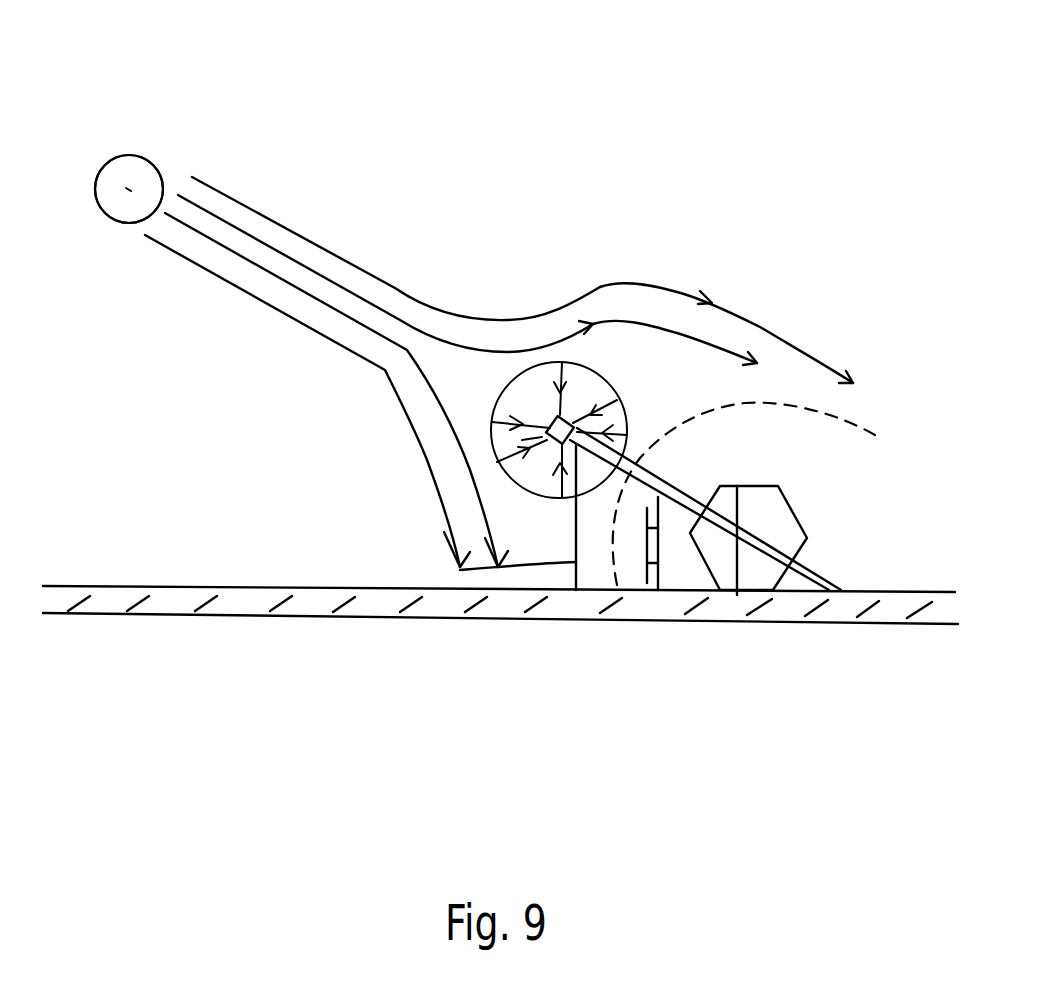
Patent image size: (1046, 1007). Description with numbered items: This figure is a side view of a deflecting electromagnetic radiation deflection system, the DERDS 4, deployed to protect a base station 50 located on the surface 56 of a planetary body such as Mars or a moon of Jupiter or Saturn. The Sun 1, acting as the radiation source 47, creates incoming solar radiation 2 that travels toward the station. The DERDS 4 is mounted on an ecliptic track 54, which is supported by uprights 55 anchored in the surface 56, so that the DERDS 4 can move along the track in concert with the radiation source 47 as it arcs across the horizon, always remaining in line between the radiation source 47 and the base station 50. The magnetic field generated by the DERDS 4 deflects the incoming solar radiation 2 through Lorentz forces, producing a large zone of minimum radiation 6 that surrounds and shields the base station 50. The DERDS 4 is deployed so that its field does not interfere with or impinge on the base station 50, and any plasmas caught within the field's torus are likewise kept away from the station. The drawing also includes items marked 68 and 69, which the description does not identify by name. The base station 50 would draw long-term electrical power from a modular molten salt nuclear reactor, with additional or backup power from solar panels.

The Sun 1 is at (103, 213).
The incoming solar radiation 2 is at (258, 212).
The DERDS 4 is at (553, 413).
The zone of minimum radiation 6 is at (727, 405).
The radiation source 47 is at (137, 155).
The base station 50 is at (737, 486).
The ecliptic track 54 is at (810, 590).
The uprights 55 is at (460, 570).
The surface 56 is at (108, 586).
The spray burst 68 is at (603, 403).
The mounting bracket 69 is at (647, 520).